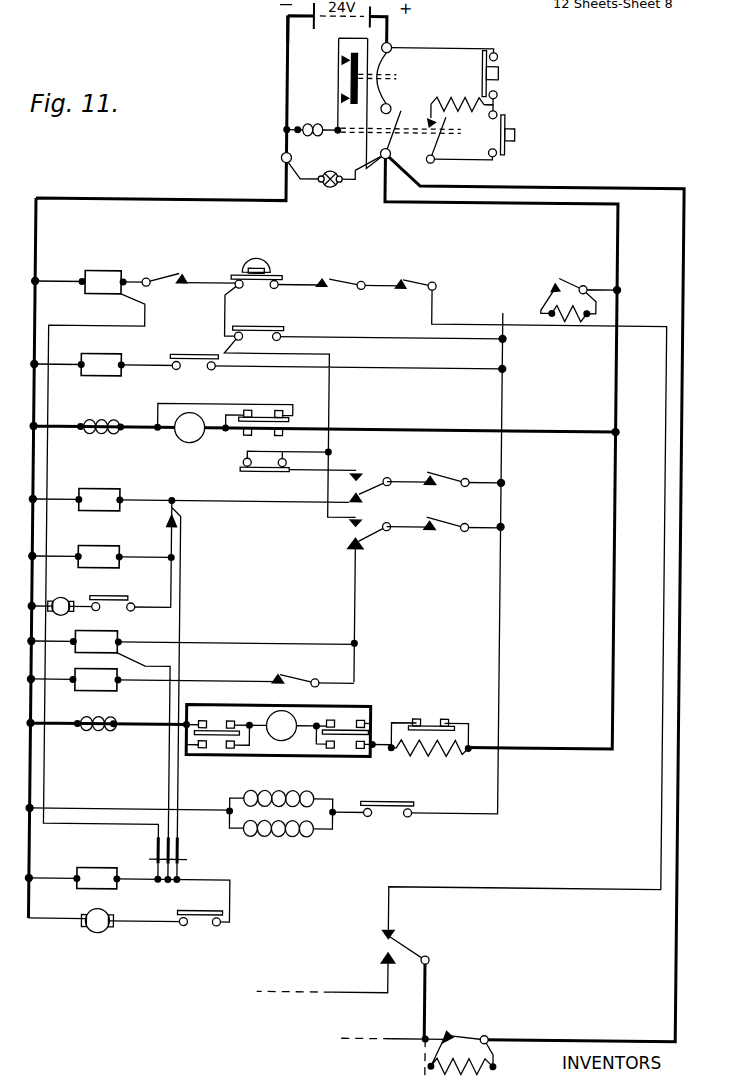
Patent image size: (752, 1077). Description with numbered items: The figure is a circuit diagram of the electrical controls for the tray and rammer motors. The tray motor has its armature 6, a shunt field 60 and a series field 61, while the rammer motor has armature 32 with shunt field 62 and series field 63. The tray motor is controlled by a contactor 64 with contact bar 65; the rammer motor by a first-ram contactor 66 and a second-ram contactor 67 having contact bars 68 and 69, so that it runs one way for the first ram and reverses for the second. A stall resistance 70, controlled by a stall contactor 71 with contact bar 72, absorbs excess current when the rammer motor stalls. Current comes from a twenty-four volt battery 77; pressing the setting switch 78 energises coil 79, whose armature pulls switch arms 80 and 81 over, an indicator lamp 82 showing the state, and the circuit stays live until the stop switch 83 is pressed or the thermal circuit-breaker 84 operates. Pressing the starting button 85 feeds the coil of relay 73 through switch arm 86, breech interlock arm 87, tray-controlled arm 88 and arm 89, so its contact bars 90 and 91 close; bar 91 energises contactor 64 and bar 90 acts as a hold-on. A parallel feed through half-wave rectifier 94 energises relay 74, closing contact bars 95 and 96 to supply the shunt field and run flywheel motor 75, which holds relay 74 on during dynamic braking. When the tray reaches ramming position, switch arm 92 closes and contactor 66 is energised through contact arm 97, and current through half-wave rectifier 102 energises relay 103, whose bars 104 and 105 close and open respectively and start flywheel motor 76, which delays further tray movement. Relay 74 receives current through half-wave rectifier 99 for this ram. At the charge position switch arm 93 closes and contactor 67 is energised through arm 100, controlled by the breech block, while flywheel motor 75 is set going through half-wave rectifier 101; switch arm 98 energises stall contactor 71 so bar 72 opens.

The tray motor armature 6 is at (186, 432).
The rammer motor armature 32 is at (282, 725).
The shunt field 60 is at (290, 780).
The series field 61 is at (108, 405).
The shunt field 62 is at (290, 834).
The series field 63 is at (102, 716).
The contactor 64 is at (112, 340).
The contact bar 65 is at (258, 412).
The first-ram contactor 66 is at (112, 476).
The second-ram contactor 67 is at (110, 642).
The contact bar 68 is at (222, 712).
The contact bar 69 is at (346, 714).
The resistance 70 is at (430, 752).
The stall contactor 71 is at (110, 688).
The contact bar 72 is at (434, 713).
The relay 73 is at (100, 275).
The relay 74 is at (100, 880).
The flywheel motor 75 is at (98, 915).
The flywheel motor 76 is at (70, 590).
The battery 77 is at (330, 22).
The setting switch 78 is at (516, 130).
The coil 79 is at (318, 124).
The switch arm 80 is at (436, 159).
The switch arm 81 is at (398, 133).
The indicator lamp 82 is at (332, 185).
The stop switch 83 is at (500, 70).
The thermal circuit-breaker 84 is at (390, 68).
The starting button 85 is at (257, 266).
The switch arm 86 is at (158, 275).
The switch arm 87 is at (340, 279).
The switch arm 88 is at (423, 279).
The switch arm 89 is at (412, 938).
The contact bar 90 is at (268, 313).
The contact bar 91 is at (198, 342).
The switch arm 92 is at (444, 471).
The switch arm 93 is at (444, 516).
The half-wave rectifier 94 is at (160, 840).
The contact bar 95 is at (394, 786).
The contact bar 96 is at (206, 898).
The contact arm 97 is at (377, 465).
The switch arm 98 is at (312, 668).
The half-wave rectifier 99 is at (186, 843).
The arm 100 is at (378, 510).
The half-wave rectifier 101 is at (176, 833).
The half-wave rectifier 102 is at (168, 527).
The relay 103 is at (112, 535).
The contact bar 104 is at (112, 583).
The contact bar 105 is at (270, 470).